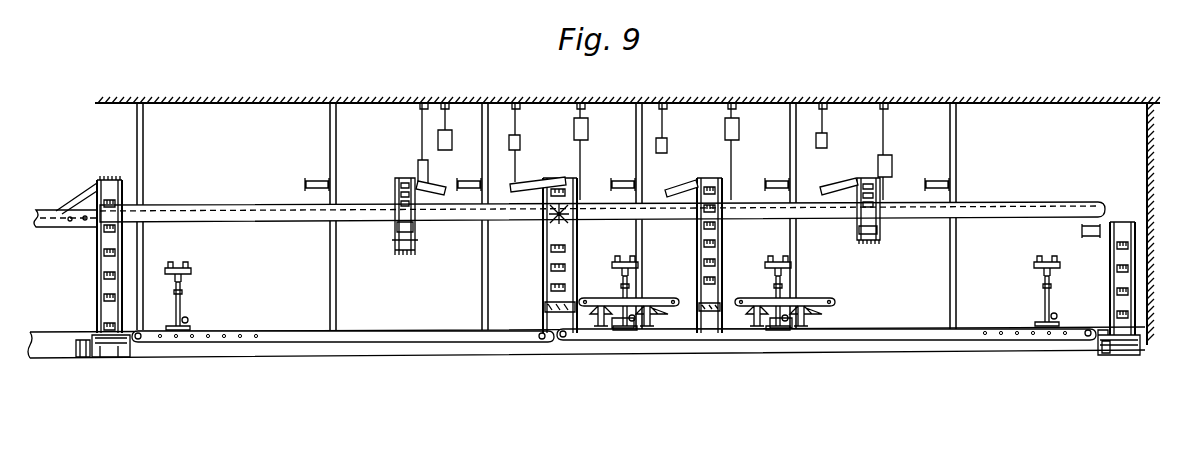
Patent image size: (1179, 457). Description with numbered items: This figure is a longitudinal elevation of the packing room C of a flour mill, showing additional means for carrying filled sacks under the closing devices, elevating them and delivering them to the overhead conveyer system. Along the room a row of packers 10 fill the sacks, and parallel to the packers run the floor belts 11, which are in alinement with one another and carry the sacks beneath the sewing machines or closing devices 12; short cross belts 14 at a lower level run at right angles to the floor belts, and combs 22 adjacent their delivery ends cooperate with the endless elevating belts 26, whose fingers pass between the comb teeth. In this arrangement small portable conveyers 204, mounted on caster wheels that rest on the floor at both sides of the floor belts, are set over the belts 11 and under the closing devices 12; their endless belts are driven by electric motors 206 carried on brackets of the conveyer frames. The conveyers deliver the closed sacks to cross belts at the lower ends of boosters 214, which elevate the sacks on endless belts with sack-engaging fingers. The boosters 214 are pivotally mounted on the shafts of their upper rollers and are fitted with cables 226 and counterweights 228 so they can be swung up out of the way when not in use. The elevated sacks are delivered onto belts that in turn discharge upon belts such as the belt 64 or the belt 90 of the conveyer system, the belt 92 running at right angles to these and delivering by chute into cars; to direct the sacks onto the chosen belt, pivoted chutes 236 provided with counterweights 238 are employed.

The packer 10 is at (497, 100).
The traveling belt 11 is at (268, 331).
The closing device 12 is at (192, 271).
The cross belt 14 is at (110, 352).
The comb 22 is at (763, 179).
The elevating belt 26 is at (96, 282).
The belt 64 is at (466, 216).
The belt 90 is at (1020, 210).
The belt 92 is at (1081, 232).
The portable conveyer 204 is at (660, 292).
The electric motor 206 is at (628, 330).
The booster 214 is at (542, 260).
The cable 226 is at (577, 150).
The counterweight 228 is at (589, 130).
The pivoted chute 236 is at (532, 184).
The counterweight 238 is at (815, 136).
The packing room C is at (1146, 122).